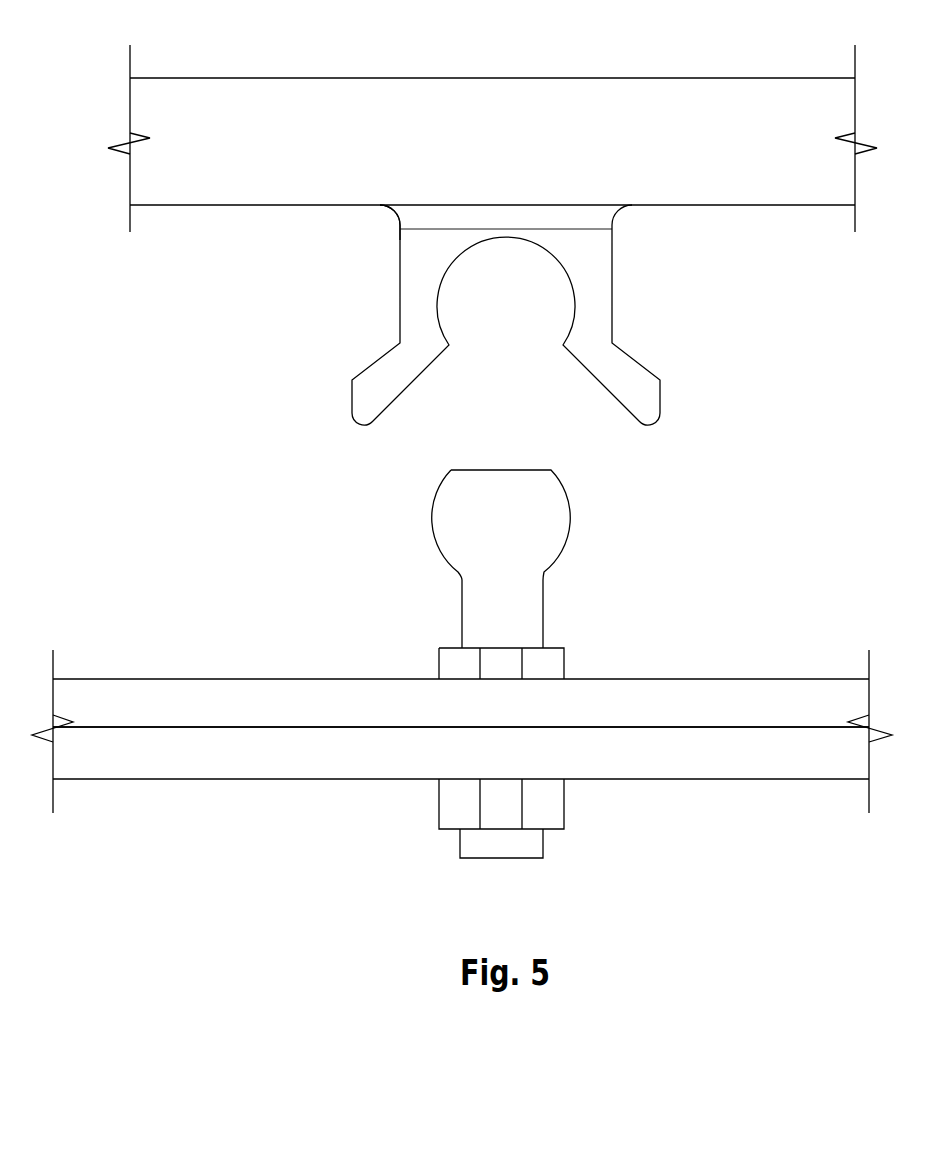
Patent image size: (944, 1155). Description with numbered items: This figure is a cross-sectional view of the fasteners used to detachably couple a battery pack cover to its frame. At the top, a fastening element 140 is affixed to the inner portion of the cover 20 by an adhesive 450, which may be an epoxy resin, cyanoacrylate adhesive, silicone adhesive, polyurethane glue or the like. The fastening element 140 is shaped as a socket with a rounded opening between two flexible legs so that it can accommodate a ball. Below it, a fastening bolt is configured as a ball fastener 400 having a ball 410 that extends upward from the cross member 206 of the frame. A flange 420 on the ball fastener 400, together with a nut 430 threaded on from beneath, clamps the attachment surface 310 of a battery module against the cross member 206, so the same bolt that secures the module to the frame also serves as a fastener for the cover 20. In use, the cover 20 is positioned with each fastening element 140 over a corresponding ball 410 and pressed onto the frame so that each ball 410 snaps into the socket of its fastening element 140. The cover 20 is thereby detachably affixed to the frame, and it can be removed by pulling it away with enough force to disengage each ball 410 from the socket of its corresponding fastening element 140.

The cover 20 is at (276, 151).
The fastening element 140 is at (612, 300).
The adhesive 450 is at (390, 210).
The ball fastener 400 is at (526, 536).
The ball 410 is at (432, 516).
The flange 420 is at (453, 647).
The nut 430 is at (438, 812).
The attachment surface 310 is at (197, 716).
The cross member 206 is at (192, 767).